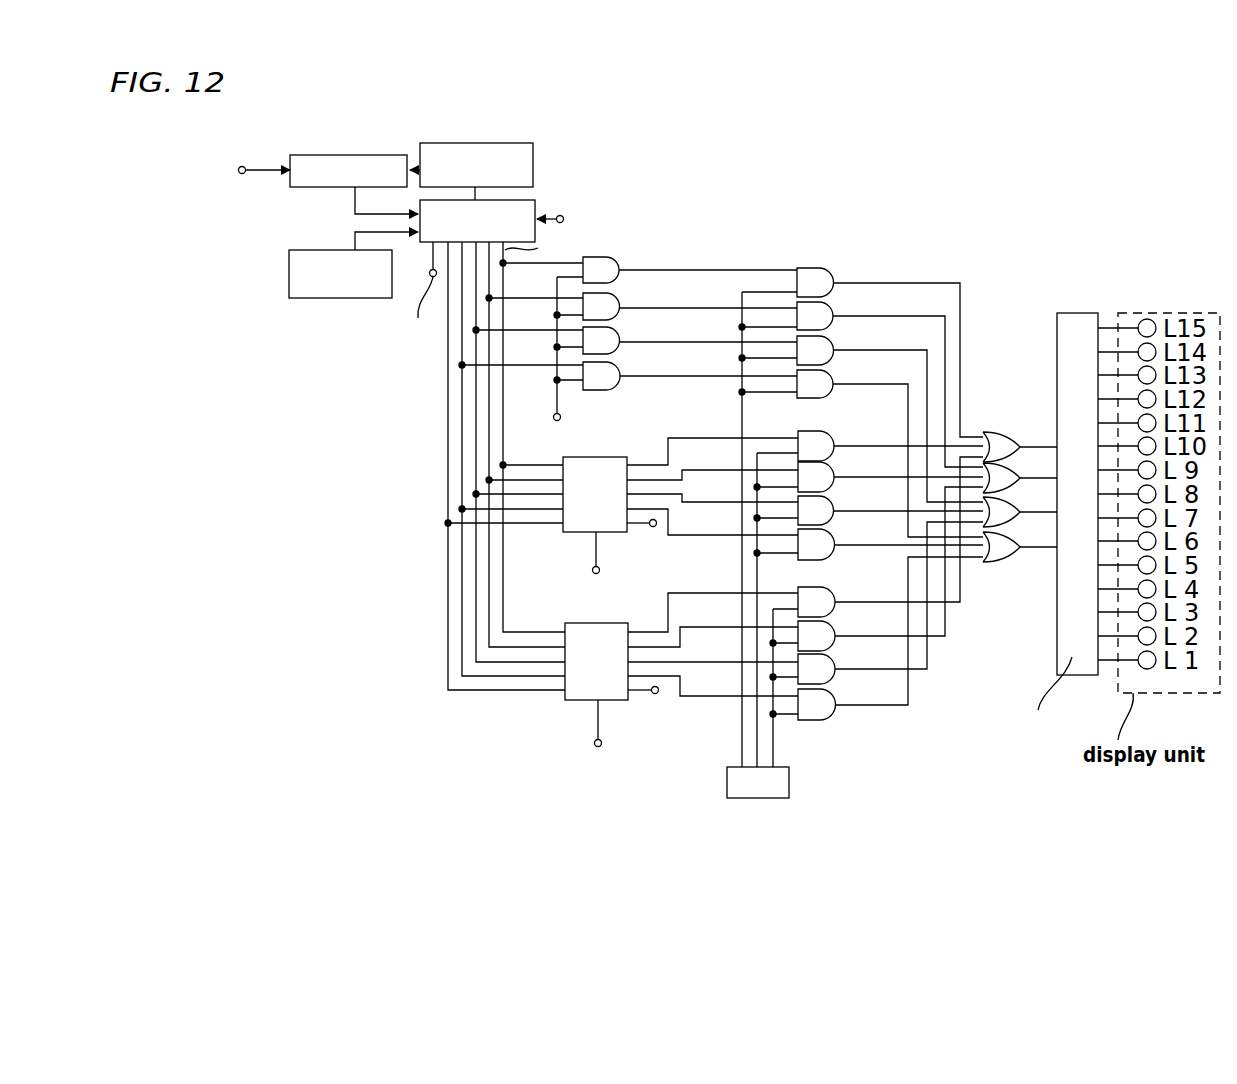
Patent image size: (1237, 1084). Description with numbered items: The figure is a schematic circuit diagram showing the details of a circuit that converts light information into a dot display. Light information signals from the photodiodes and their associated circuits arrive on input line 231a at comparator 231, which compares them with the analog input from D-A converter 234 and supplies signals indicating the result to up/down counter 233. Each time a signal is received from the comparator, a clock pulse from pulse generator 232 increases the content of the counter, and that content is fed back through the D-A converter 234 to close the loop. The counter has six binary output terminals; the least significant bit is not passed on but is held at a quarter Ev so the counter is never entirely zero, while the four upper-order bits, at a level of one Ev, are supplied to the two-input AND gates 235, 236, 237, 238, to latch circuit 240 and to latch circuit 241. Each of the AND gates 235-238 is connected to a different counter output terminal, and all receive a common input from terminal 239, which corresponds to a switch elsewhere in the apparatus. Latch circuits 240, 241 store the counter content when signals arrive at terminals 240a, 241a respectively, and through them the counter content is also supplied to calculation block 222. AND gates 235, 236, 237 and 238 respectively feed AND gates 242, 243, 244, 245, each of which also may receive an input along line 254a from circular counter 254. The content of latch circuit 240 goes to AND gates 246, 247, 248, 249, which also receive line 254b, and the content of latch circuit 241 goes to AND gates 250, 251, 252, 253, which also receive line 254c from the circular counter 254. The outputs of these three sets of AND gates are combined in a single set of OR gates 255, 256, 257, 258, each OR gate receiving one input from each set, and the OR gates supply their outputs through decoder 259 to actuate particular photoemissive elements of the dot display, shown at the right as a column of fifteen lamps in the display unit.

The comparator 231 is at (345, 155).
The input line 231a is at (270, 170).
The pulse generator 232 is at (322, 298).
The up/down counter 233 is at (530, 200).
The D-A converter 234 is at (497, 143).
The AND gate 235 is at (612, 256).
The AND gate 236 is at (612, 292).
The AND gate 237 is at (612, 327).
The AND gate 238 is at (612, 362).
The terminal 239 is at (560, 417).
The latch circuit 240 is at (612, 457).
The terminal 240a is at (592, 572).
The calculation block 222 is at (655, 527).
The latch circuit 241 is at (600, 623).
The terminal 241a is at (595, 746).
The AND gate 242 is at (825, 268).
The AND gate 243 is at (825, 302).
The AND gate 244 is at (825, 336).
The AND gate 245 is at (825, 370).
The AND gate 246 is at (828, 431).
The AND gate 247 is at (845, 452).
The AND gate 248 is at (828, 496).
The AND gate 249 is at (828, 529).
The AND gate 250 is at (830, 587).
The AND gate 251 is at (846, 612).
The AND gate 252 is at (846, 645).
The AND gate 253 is at (846, 680).
The circular counter 254 is at (789, 778).
The line 254a is at (742, 748).
The line 254b is at (757, 733).
The line 254c is at (773, 738).
The OR gate 255 is at (992, 430).
The OR gate 256 is at (1025, 440).
The OR gate 257 is at (1022, 552).
The OR gate 258 is at (992, 565).
The decoder 259 is at (1080, 313).